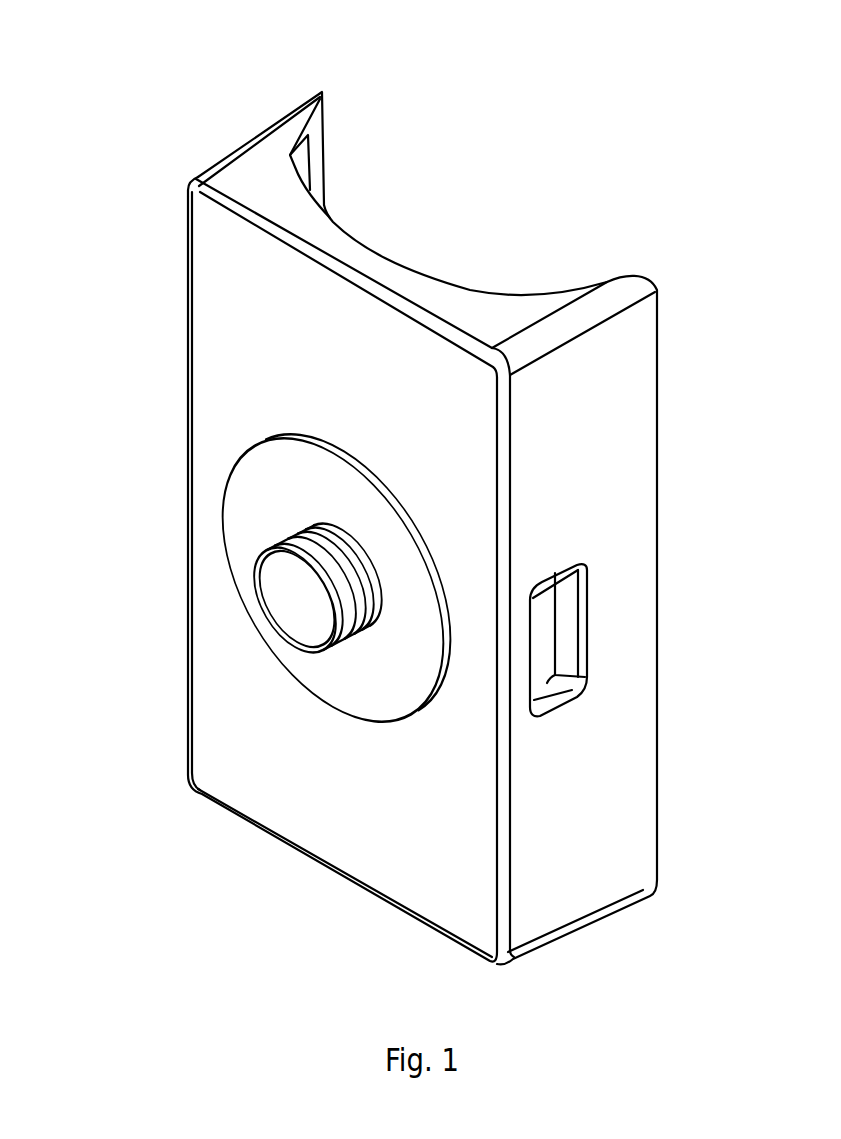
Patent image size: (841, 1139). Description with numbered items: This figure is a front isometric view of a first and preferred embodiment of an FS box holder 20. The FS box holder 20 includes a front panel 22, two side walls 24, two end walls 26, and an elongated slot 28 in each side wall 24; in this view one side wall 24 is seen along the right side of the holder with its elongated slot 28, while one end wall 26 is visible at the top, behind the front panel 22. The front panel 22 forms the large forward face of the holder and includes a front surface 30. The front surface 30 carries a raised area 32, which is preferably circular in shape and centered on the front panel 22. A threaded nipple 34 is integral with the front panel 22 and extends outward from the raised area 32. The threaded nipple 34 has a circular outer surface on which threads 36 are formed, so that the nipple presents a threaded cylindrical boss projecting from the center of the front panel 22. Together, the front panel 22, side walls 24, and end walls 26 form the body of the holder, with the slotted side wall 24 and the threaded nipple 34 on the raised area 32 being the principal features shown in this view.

The FS box holder 20 is at (399, 487).
The front panel 22 is at (235, 336).
The side wall 24 is at (588, 443).
The end wall 26 is at (275, 186).
The elongated slot 28 is at (542, 630).
The front surface 30 is at (344, 371).
The raised area 32 is at (422, 645).
The threaded nipple 34 is at (239, 588).
The threads 36 is at (352, 564).